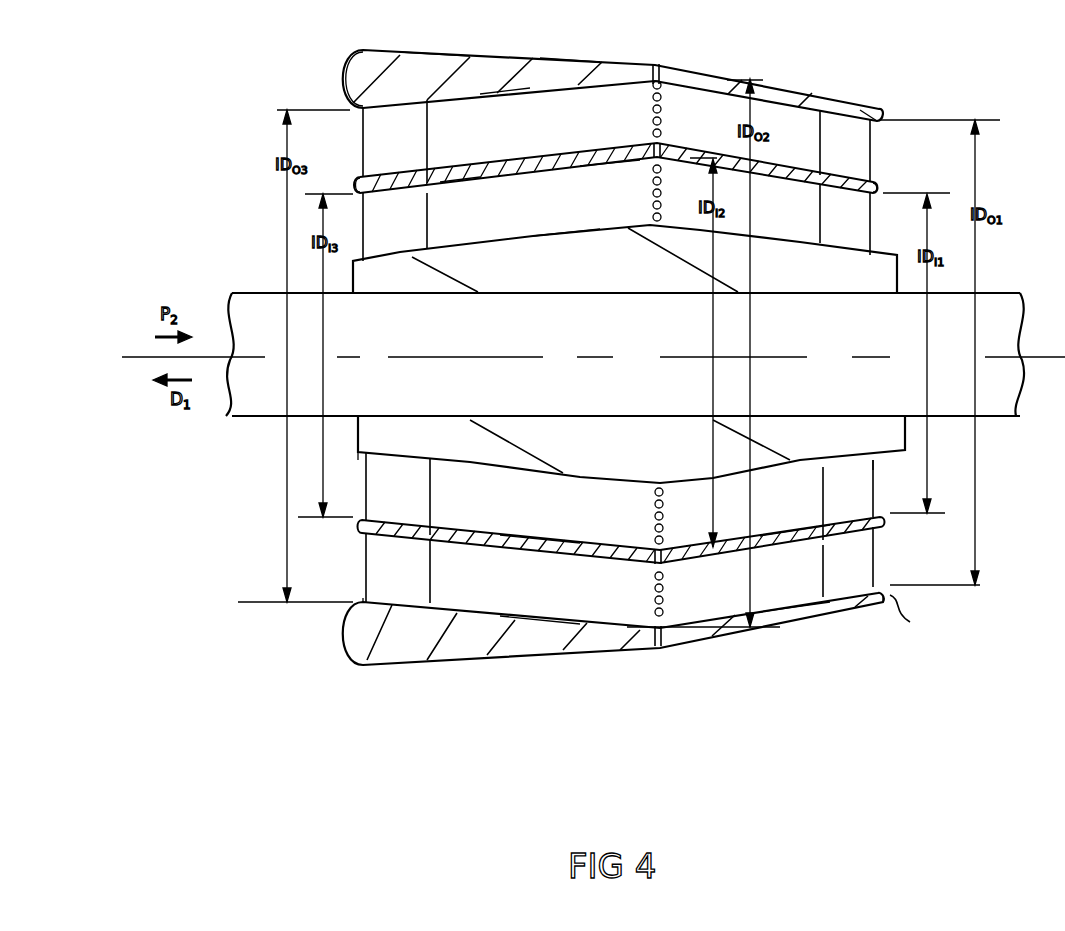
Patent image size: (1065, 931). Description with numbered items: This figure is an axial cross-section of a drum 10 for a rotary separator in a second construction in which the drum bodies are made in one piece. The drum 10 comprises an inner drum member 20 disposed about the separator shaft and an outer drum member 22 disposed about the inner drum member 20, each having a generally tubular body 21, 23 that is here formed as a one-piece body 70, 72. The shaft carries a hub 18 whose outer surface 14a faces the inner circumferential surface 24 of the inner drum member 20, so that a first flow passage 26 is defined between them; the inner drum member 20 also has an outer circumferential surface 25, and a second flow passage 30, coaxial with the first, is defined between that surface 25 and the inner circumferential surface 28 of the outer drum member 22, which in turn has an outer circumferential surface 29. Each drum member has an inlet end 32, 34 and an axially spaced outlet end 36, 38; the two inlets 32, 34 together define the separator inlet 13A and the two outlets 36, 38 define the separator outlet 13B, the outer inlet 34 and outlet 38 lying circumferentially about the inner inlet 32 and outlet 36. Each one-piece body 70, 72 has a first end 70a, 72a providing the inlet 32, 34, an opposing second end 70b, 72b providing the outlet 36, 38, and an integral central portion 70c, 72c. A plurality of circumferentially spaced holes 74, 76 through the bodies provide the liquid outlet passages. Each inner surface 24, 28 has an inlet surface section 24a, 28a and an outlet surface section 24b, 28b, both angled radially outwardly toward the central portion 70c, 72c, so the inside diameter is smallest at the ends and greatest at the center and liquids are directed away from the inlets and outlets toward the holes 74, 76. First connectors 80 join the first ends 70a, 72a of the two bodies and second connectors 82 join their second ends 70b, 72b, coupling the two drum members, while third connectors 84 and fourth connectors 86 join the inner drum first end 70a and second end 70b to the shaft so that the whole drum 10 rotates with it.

The drum 10 is at (195, 153).
The separator inlet 13A is at (343, 529).
The separator outlet 13B is at (930, 167).
The outer surface of the shaft 14a is at (556, 228).
The hub 18 is at (560, 278).
The inner drum member 20 is at (595, 531).
The tubular body 21 is at (461, 160).
The outer drum member 22 is at (599, 74).
The tubular body 23 is at (430, 46).
The inner circumferential surface 24 is at (603, 170).
The inlet surface section 24a is at (548, 537).
The outlet surface section 24b is at (790, 528).
The outer circumferential surface 25 is at (583, 142).
The first flow passage 26 is at (596, 516).
The inner circumferential surface 28 is at (504, 100).
The inlet surface section 28a is at (540, 612).
The outlet surface section 28b is at (790, 606).
The outer circumferential surface 29 is at (563, 50).
The second flow passage 30 is at (626, 631).
The inlet end 32 is at (353, 496).
The inlet end 34 is at (351, 575).
The outlet end 36 is at (884, 485).
The outlet end 38 is at (890, 557).
The one-piece body 70 is at (623, 155).
The first end 70a is at (348, 183).
The second end 70b is at (880, 182).
The central portion 70c is at (656, 148).
The one-piece body 72 is at (493, 66).
The first end 72a is at (342, 73).
The second end 72b is at (884, 109).
The central portion 72c is at (655, 62).
The holes 74 is at (662, 200).
The holes 76 is at (662, 116).
The first connector 80 is at (412, 136).
The second connector 82 is at (830, 143).
The third connector 84 is at (412, 223).
The fourth connector 86 is at (826, 207).